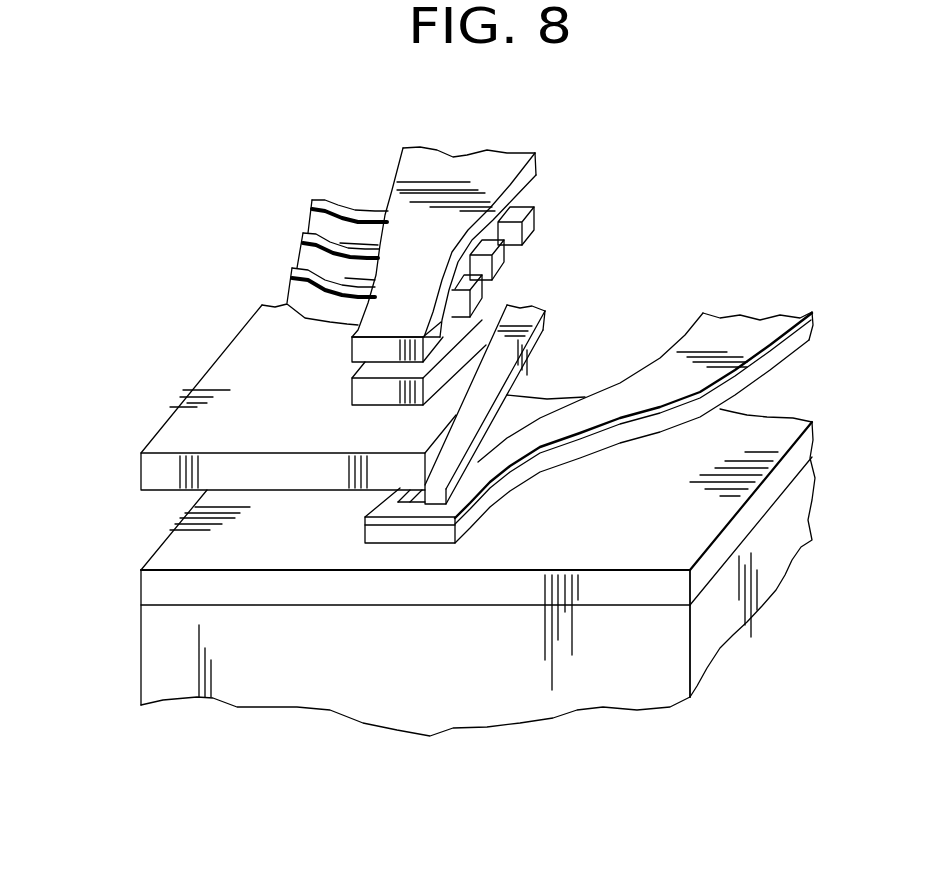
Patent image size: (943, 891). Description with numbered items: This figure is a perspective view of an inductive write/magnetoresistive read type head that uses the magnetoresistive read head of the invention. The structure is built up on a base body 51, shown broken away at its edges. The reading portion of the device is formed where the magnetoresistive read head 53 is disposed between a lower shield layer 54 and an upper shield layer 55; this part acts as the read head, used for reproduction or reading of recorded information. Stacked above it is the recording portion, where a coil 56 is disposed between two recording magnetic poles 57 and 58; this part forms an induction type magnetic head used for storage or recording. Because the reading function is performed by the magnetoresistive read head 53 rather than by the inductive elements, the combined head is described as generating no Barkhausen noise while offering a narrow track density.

The substrate 51 is at (478, 595).
The magnetoresistive read head 53 is at (540, 436).
The shield layer 54 is at (422, 539).
The shield layer 55 is at (244, 400).
The coil 56 is at (481, 242).
The recording magnetic pole 57 is at (400, 404).
The recording magnetic pole 58 is at (347, 350).